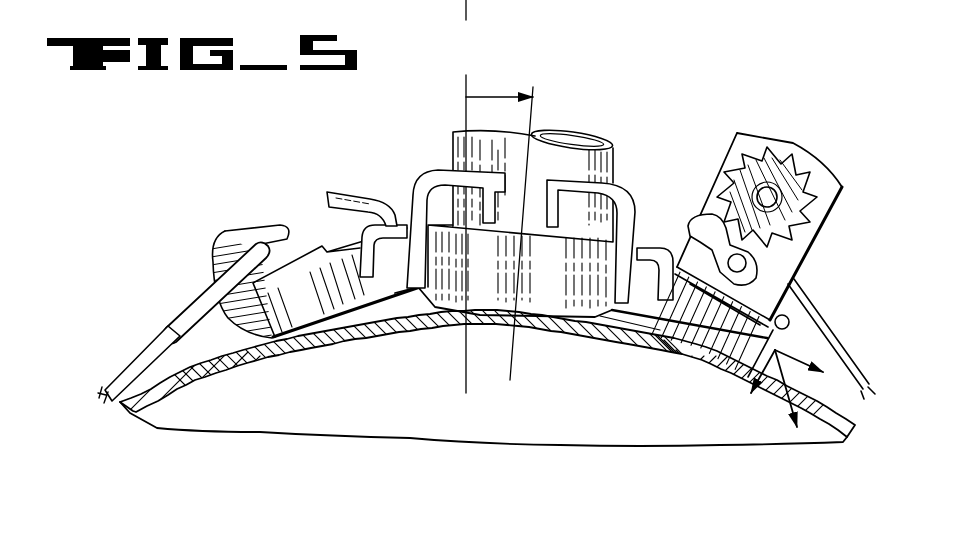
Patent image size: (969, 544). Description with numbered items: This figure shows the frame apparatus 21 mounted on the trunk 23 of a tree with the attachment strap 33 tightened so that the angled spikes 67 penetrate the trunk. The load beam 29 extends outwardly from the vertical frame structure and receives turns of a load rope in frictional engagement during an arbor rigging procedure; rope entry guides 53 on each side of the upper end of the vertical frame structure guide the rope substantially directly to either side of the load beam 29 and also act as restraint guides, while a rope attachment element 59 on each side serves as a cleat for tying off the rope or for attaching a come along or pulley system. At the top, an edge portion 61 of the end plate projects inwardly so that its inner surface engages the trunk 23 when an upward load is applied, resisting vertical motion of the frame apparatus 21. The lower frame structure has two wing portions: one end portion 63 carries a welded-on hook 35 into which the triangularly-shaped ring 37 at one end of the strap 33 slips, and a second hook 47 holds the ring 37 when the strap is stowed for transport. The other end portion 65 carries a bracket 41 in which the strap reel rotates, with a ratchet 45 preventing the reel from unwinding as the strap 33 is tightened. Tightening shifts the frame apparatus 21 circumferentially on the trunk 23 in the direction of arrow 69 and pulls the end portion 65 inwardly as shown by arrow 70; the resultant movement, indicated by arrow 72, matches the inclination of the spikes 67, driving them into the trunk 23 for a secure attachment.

The frame apparatus 21 is at (148, 183).
The trunk 23 is at (563, 422).
The load beam 29 is at (587, 133).
The strap 33 is at (800, 290).
The hook 35 is at (222, 241).
The triangularly-shaped ring 37 is at (212, 288).
The bracket 41 is at (748, 145).
The ratchet 45 is at (773, 148).
The second hook 47 is at (342, 190).
The rope entry guides 53 is at (427, 180).
The rope attachment element 59 is at (360, 232).
The edge portion 61 is at (612, 342).
The end portion 63 is at (353, 295).
The end portion 65 is at (636, 348).
The angled spikes 67 is at (750, 377).
The direction arrow 69 is at (803, 357).
The direction arrow 70 is at (770, 403).
The direction arrow 72 is at (795, 319).